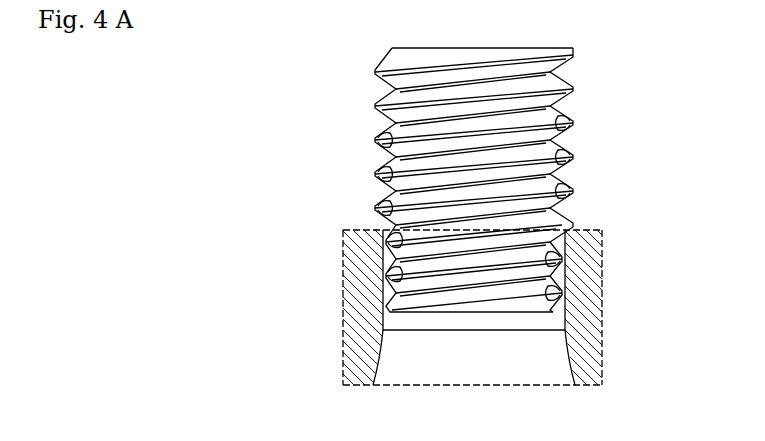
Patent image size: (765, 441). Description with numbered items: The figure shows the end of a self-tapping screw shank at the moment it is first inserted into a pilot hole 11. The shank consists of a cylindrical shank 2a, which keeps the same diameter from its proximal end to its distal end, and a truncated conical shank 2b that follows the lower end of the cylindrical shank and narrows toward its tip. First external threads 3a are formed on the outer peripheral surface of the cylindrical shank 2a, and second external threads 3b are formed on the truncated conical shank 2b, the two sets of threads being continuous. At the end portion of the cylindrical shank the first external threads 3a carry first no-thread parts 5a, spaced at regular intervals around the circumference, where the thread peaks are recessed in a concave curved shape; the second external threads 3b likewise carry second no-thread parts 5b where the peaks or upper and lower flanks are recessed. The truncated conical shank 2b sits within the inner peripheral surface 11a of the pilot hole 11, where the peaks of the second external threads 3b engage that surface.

The cylindrical shank 2a is at (337, 49).
The truncated conical shank 2b is at (337, 312).
The first external threads 3a is at (562, 178).
The second external threads 3b is at (566, 278).
The first no-thread parts 5a is at (382, 205).
The second no-thread parts 5b is at (392, 282).
The pilot hole 11 is at (487, 363).
The inner peripheral surface 11a is at (379, 362).